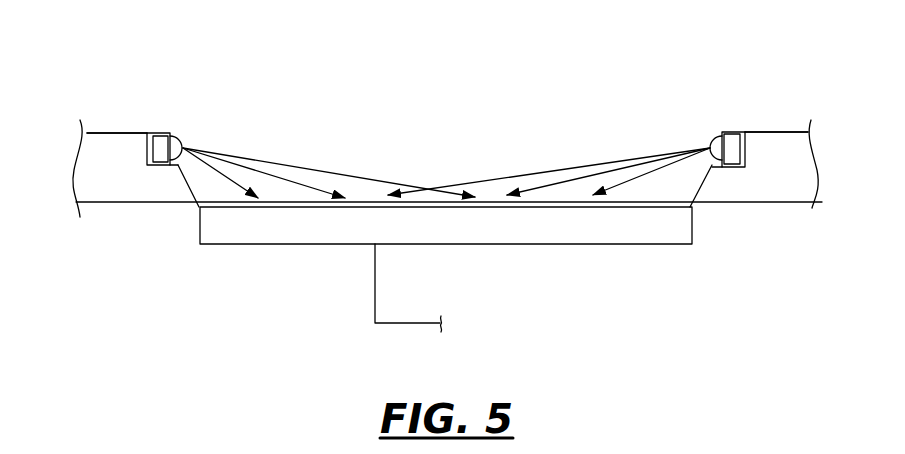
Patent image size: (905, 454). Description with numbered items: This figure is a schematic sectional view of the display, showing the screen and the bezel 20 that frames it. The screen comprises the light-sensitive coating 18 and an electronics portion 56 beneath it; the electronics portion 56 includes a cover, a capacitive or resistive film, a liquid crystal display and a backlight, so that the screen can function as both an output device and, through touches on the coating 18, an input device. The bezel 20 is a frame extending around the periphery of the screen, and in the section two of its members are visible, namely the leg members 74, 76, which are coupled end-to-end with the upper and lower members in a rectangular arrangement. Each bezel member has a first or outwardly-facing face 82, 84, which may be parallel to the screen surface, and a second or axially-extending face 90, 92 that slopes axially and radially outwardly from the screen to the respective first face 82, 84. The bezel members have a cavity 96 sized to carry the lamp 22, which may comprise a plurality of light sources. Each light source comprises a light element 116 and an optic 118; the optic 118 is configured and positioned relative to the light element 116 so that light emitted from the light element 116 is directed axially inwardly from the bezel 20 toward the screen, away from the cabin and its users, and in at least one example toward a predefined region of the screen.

The light-sensitive coating 18 is at (693, 207).
The bezel 20 is at (118, 124).
The lamp 22 is at (719, 129).
The electronics portion 56 is at (229, 230).
The fourth or leg member 74 is at (102, 124).
The second or leg member 76 is at (790, 125).
The first or outwardly-facing face 82 is at (134, 131).
The first or outwardly-facing face 84 is at (772, 130).
The second or axially-extending face 90 is at (196, 184).
The second or axially-extending face 92 is at (696, 181).
The cavity 96 is at (160, 166).
The light element 116 is at (158, 150).
The optic 118 is at (184, 143).